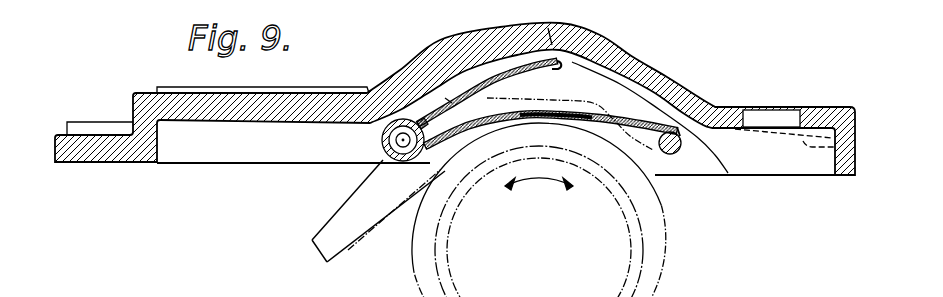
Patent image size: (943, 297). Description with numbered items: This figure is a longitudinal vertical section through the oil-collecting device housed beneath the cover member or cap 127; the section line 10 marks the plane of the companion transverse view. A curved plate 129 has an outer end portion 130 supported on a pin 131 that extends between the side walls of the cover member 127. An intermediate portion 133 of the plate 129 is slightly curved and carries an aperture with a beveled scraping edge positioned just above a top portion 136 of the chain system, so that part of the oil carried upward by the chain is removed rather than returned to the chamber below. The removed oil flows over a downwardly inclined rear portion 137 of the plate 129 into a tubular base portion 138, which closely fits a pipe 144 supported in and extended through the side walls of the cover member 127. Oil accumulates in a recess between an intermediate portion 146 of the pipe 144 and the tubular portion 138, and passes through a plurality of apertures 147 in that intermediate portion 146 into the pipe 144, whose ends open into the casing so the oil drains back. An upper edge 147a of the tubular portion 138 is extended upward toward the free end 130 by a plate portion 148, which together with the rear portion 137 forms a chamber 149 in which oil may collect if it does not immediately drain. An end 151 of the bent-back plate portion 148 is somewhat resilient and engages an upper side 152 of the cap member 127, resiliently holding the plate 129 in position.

The section line 10 is at (407, 0).
The cover member 127 is at (600, 33).
The curved plate 129 is at (662, 118).
The outer end portion 130 is at (683, 121).
The pin 131 is at (680, 153).
The intermediate portion 133 is at (540, 112).
The top portion of the chain system 136 is at (533, 121).
The downwardly-inclined rear portion 137 is at (478, 112).
The tubular base portion 138 is at (383, 148).
The pipe 144 is at (388, 167).
The intermediate portion of the pipe 146 is at (383, 161).
The apertures 147 is at (424, 110).
The upper edge 147a is at (450, 101).
The plate portion 148 is at (468, 92).
The chamber 149 is at (440, 181).
The end of the bent-back wall portion 151 is at (561, 64).
The upper side of the cap member 152 is at (552, 50).